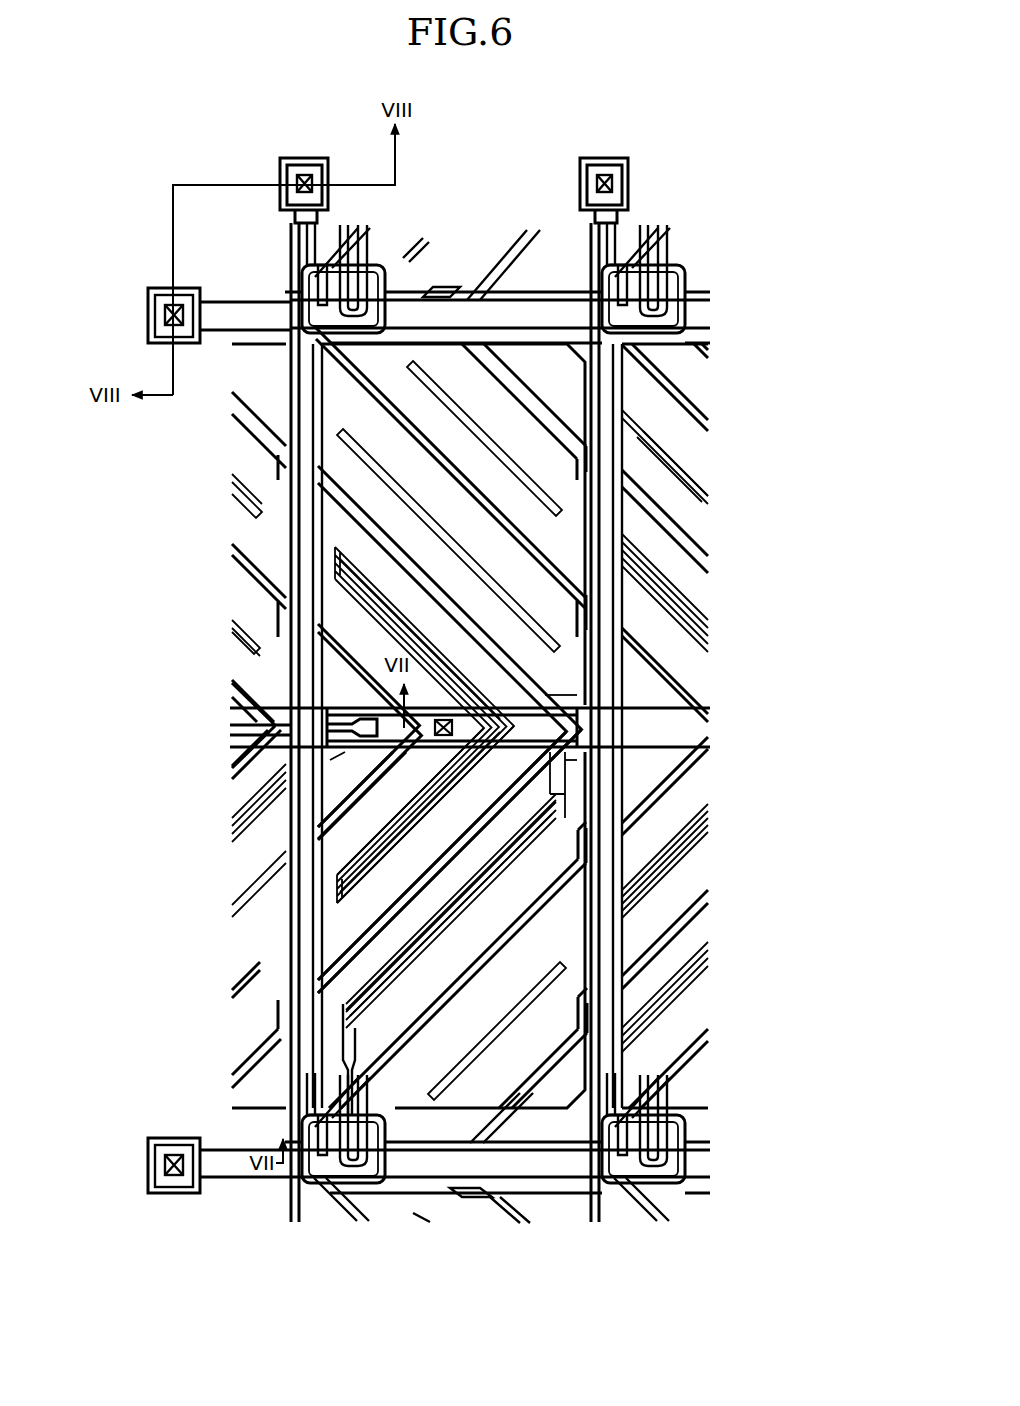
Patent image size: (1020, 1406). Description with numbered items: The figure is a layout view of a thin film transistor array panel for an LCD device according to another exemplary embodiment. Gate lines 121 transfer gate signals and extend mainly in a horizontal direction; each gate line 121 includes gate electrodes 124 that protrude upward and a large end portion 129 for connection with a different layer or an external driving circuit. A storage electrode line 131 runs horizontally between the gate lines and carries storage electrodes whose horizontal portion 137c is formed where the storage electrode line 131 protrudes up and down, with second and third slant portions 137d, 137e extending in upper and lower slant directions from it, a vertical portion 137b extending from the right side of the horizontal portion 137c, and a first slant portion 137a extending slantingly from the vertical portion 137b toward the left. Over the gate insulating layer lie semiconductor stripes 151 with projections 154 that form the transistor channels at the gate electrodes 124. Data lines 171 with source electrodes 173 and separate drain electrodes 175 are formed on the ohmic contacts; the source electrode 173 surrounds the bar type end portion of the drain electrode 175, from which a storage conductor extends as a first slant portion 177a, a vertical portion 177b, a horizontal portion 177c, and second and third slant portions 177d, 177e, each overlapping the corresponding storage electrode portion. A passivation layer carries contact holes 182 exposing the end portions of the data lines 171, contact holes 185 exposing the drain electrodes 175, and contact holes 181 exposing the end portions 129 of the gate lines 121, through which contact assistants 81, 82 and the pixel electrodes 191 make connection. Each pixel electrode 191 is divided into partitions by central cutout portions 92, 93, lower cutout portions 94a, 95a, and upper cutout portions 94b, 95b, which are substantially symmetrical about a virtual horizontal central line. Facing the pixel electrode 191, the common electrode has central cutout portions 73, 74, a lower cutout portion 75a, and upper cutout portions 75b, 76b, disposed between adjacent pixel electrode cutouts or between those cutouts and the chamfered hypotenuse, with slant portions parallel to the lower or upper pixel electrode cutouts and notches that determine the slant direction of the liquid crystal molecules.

The pixel electrode 191 is at (306, 164).
The contact hole 182 is at (297, 180).
The contact assistant 82 is at (330, 162).
The end portion of gate line 129 is at (165, 292).
The contact assistant 81 is at (150, 296).
The contact hole 181 is at (167, 318).
The gate line 121 is at (535, 300).
The gate electrode 124 is at (328, 1190).
The storage electrode line 131 is at (612, 708).
The first slant portion of storage electrode 137a is at (352, 975).
The vertical portion of storage electrode 137b is at (567, 781).
The horizontal portion of storage electrode 137c is at (548, 690).
The second slant portion of storage electrode 137d is at (340, 517).
The third slant portion of storage electrode 137e is at (340, 880).
The semiconductor stripe 151 is at (292, 570).
The projection of semiconductor stripe 154 is at (372, 1190).
The data line 171 is at (315, 562).
The source electrode 173 is at (318, 1185).
The drain electrode 175 is at (310, 1128).
The first slant portion of storage conductor 177a is at (410, 945).
The vertical portion of storage conductor 177b is at (567, 793).
The horizontal portion of storage conductor 177c is at (567, 757).
The second slant portion of storage conductor 177d is at (345, 594).
The third slant portion of storage conductor 177e is at (385, 830).
The contact hole 185 is at (438, 720).
The central cutout portion 73 is at (343, 798).
The central cutout portion 74 is at (340, 511).
The lower cutout portion 75a is at (397, 1040).
The upper cutout portion 75b is at (365, 399).
The upper cutout portion 76b is at (552, 396).
The central cutout portion 92 is at (345, 763).
The central cutout portion 93 is at (388, 627).
The lower cutout portion 94a is at (487, 893).
The upper cutout portion 94b is at (458, 534).
The lower cutout portion 95a is at (522, 1018).
The upper cutout portion 95b is at (552, 485).